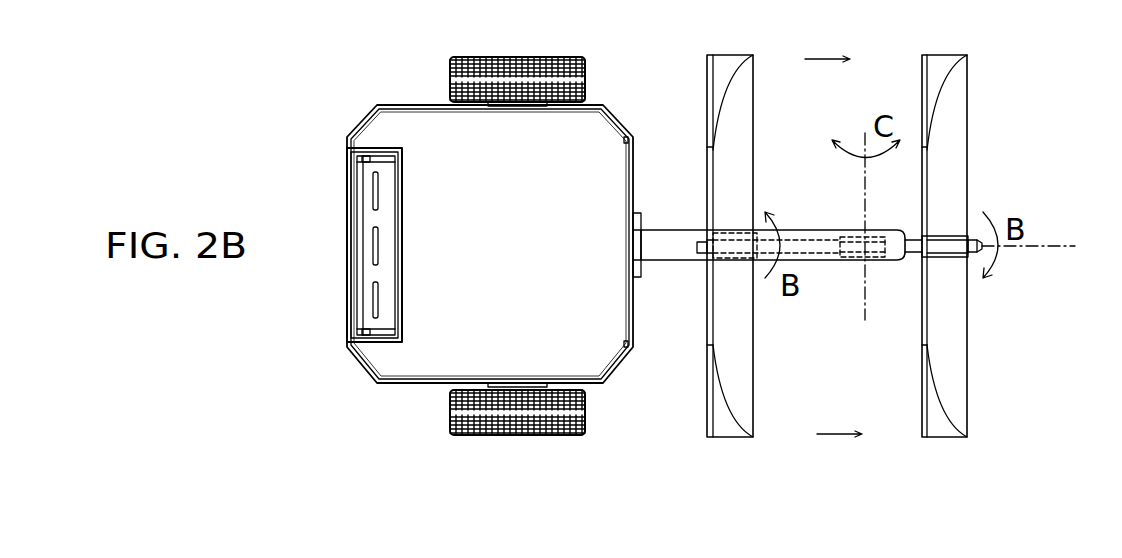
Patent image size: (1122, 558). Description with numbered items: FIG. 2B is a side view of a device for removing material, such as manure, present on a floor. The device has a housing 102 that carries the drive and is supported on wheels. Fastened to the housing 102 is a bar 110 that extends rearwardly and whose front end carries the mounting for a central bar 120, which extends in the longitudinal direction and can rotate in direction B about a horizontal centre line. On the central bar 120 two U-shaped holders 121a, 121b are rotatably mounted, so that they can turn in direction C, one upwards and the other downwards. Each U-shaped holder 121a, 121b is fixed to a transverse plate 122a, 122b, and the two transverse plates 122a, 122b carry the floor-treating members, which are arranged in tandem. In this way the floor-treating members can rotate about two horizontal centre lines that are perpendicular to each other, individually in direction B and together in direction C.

The housing 102 is at (546, 265).
The bar 110 is at (678, 243).
The central bar 120 is at (913, 247).
The U-shaped holder 121a is at (945, 237).
The U-shaped holder 121b is at (735, 235).
The transverse plate 122a is at (943, 66).
The transverse plate 122b is at (722, 66).